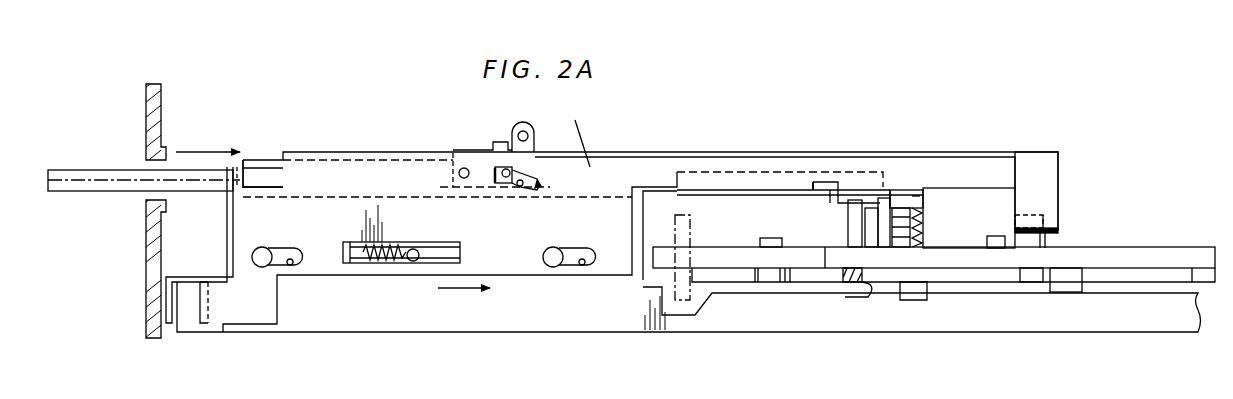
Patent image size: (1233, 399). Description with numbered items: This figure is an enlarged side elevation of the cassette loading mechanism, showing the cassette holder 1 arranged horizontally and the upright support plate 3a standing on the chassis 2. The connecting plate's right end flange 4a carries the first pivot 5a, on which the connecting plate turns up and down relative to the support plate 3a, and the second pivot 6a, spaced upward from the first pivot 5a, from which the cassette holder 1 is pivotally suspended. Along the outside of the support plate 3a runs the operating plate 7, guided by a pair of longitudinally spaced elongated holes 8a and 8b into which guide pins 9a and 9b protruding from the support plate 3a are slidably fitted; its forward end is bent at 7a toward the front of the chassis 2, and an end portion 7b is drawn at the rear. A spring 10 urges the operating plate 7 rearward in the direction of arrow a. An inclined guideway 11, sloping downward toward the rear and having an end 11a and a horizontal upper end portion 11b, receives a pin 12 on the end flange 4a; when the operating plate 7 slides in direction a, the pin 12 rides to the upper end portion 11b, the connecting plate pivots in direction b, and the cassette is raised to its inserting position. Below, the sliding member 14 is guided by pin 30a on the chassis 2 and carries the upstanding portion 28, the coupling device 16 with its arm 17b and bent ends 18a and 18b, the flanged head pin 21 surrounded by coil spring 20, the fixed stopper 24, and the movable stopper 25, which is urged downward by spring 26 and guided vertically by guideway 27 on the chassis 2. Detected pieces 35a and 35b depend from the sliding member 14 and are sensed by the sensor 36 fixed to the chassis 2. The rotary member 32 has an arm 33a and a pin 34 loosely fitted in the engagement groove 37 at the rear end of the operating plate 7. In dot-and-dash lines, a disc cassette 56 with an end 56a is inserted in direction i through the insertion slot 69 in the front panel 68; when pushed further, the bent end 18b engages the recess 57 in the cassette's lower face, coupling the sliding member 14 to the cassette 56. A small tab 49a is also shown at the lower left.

The cassette holder 1 is at (318, 160).
The chassis 2 is at (592, 323).
The support plate 3a is at (265, 165).
The end flange 4a is at (477, 150).
The first pivot 5a is at (459, 174).
The second pivot 6a is at (523, 131).
The operating plate 7 is at (657, 152).
The bent forward end 7a is at (204, 323).
The cover plate end block 7b is at (1050, 152).
The elongated hole 8a is at (293, 266).
The elongated hole 8b is at (585, 267).
The guide pin 9a is at (263, 264).
The guide pin 9b is at (553, 267).
The spring 10 is at (382, 265).
The inclined guideway 11 is at (520, 188).
The lever tip 11a is at (542, 190).
The horizontal upper end portion 11b is at (505, 178).
The pin 12 is at (505, 168).
The sliding member 14 is at (945, 275).
The coupling device 16 is at (930, 230).
The arm 17b is at (883, 203).
The bent end 18a is at (921, 181).
The bent end 18b is at (828, 202).
The coil spring 20 is at (926, 217).
The flanged head pin 21 is at (923, 185).
The fixed stopper 24 is at (882, 183).
The movable stopper 25 is at (687, 217).
The spring 26 is at (852, 290).
The guideway 27 is at (804, 292).
The upstanding portion 28 is at (994, 235).
The pin 30a is at (777, 248).
The rotary member 32 is at (1000, 250).
The arm 33a is at (1020, 228).
The pin 34 is at (1058, 231).
The detected piece 35a is at (1200, 282).
The detected piece 35b is at (1043, 282).
The sensor 36 is at (1080, 282).
The engagement groove 37 is at (1045, 215).
The tab 49a is at (167, 323).
The disc cassette 56 is at (115, 170).
The shaft end 56a is at (897, 178).
The engaging portion or recess 57 is at (835, 182).
The front panel 68 is at (147, 273).
The insertion slot 69 is at (147, 195).
The arrow a is at (463, 293).
The arrow b is at (598, 141).
The arrow i is at (202, 150).